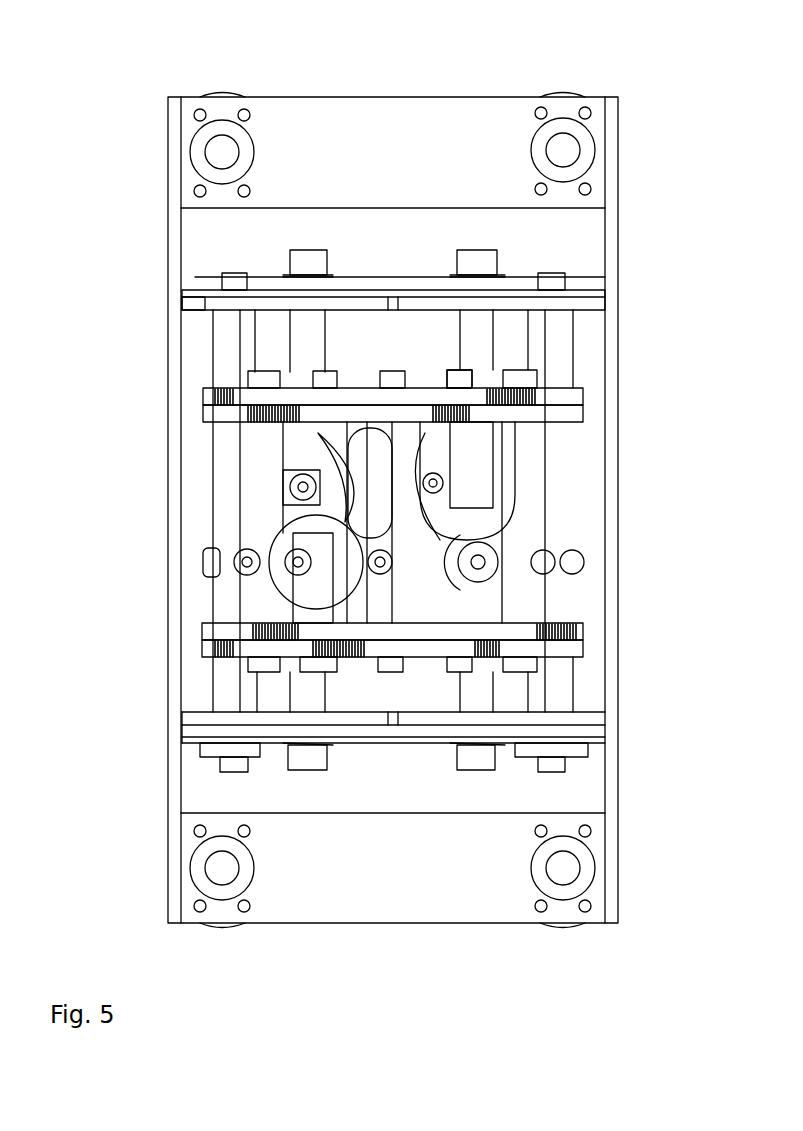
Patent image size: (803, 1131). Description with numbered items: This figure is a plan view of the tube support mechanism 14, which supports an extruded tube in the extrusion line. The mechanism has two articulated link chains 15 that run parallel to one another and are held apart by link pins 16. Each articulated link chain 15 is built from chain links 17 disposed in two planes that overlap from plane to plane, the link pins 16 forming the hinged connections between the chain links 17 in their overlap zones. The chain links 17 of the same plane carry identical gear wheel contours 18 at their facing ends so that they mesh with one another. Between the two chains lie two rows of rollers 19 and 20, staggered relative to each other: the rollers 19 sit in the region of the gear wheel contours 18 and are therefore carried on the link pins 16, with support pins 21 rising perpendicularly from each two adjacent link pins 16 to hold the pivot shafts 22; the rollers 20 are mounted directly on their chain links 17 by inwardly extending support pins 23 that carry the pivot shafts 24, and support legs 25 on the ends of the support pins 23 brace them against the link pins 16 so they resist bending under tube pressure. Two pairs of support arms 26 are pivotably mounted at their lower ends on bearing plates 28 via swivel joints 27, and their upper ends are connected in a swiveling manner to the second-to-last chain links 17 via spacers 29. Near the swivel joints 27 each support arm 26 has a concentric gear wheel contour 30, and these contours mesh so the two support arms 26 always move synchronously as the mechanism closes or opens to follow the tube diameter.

The tube support mechanism 14 is at (618, 50).
The articulated link chain 15 is at (598, 403).
The link pin 16 is at (225, 520).
The chain link 17 is at (250, 408).
The gear wheel contour 18 is at (545, 398).
The roller 19 is at (290, 578).
The roller 20 is at (503, 468).
The support pin 21 is at (500, 580).
The pivot shaft 22 is at (490, 547).
The support pin 23 is at (290, 450).
The pivot shaft 24 is at (290, 505).
The support leg 25 is at (290, 492).
The support arm 26 is at (182, 313).
The swivel joint 27 is at (310, 250).
The bearing plate 28 is at (198, 285).
The spacer 29 is at (267, 353).
The gear wheel contour 30 is at (390, 300).